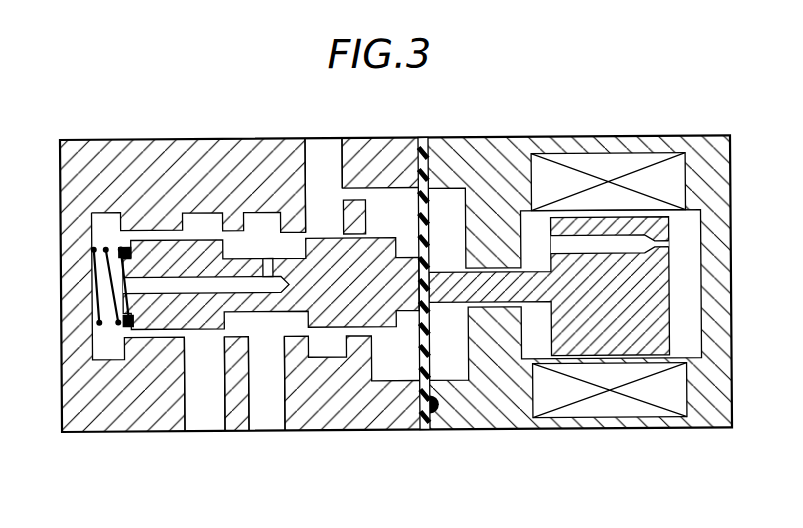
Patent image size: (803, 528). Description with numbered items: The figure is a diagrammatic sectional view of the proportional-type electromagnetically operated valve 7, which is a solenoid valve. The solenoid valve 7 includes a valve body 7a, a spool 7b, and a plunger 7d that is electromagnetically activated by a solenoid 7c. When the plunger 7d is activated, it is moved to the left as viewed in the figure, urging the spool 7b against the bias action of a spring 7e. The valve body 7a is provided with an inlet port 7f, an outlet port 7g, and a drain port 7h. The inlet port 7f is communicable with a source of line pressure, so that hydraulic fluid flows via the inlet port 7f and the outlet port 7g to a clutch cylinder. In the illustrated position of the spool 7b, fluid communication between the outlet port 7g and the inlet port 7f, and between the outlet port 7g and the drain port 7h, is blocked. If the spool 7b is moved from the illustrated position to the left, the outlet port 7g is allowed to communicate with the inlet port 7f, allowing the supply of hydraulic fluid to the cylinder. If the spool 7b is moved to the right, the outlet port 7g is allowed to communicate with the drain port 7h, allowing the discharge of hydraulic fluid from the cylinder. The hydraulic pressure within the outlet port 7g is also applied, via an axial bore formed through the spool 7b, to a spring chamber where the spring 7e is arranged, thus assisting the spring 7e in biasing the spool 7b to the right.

The electromagnetically operated valve 7 is at (515, 140).
The valve body 7a is at (437, 140).
The spool 7b is at (360, 320).
The solenoid 7c is at (590, 412).
The plunger 7d is at (627, 344).
The spring 7e is at (114, 292).
The inlet port 7f is at (193, 430).
The outlet port 7g is at (284, 414).
The drain port 7h is at (323, 133).